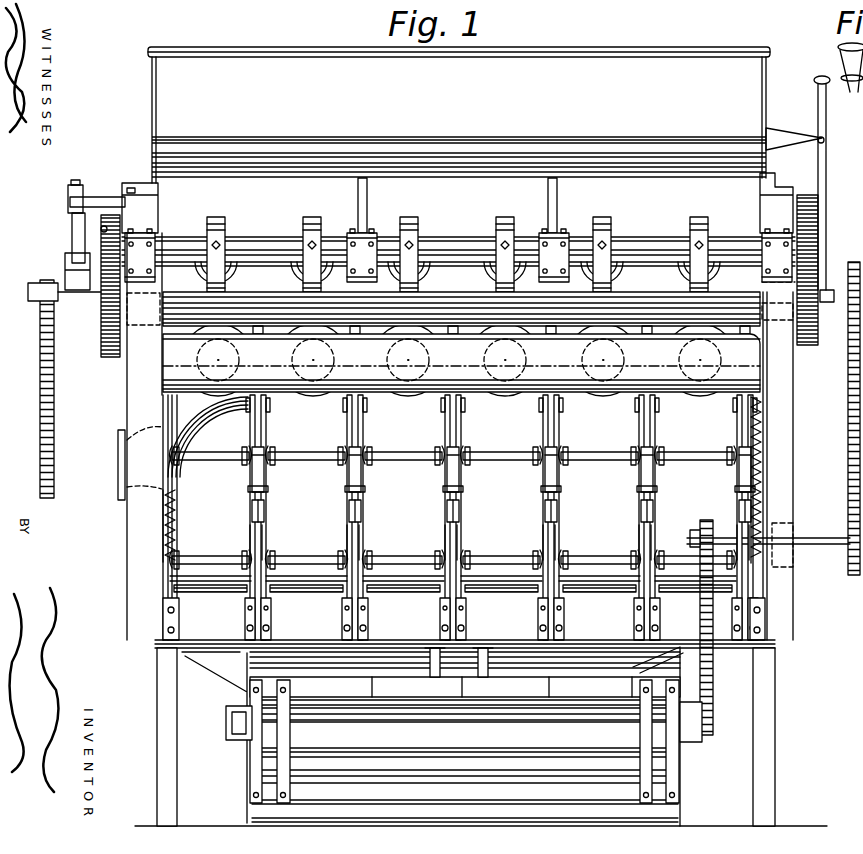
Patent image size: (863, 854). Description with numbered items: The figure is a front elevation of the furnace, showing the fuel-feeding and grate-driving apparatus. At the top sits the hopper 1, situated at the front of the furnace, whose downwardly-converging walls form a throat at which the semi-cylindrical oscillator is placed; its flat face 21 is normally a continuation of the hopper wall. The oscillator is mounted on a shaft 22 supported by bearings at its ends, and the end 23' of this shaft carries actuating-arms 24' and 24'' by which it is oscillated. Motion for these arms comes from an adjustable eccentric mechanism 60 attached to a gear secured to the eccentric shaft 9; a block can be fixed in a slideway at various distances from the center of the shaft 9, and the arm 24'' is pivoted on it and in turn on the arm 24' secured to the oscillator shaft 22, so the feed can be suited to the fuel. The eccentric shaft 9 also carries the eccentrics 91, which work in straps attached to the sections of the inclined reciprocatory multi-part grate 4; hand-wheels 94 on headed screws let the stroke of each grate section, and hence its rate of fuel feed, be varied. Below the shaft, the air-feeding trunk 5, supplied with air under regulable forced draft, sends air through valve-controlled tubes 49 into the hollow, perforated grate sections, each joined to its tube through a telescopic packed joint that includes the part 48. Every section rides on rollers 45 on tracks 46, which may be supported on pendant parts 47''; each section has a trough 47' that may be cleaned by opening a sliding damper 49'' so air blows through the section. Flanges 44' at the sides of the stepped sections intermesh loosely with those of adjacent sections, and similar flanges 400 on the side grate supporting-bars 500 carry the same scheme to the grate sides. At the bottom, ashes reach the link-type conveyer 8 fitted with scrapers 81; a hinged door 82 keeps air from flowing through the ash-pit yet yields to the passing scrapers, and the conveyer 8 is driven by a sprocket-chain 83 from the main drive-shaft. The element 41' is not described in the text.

The hopper 1 is at (459, 115).
The inclined reciprocatory multi-part grate 4 is at (38, 283).
The air-feeding trunk 5 is at (461, 363).
The conveyer 8 is at (465, 761).
The eccentric shaft 9 is at (170, 265).
The flat face of the oscillator 21 is at (102, 229).
The oscillator shaft 22 is at (105, 197).
The end of the oscillator shaft 23' is at (59, 187).
The actuating arm 24' is at (56, 237).
The actuating arm 24'' is at (59, 264).
The guide block 41' is at (501, 459).
The flanges 44' is at (463, 478).
The rollers 45 is at (447, 552).
The tracks 46 is at (447, 586).
The trough 47' is at (463, 519).
The pendant parts 47'' is at (460, 517).
The telescopic packed joint 48 is at (465, 400).
The valve-controlled tube 49 is at (459, 360).
The sliding damper 49'' is at (453, 602).
The adjustable eccentric mechanism 60 is at (93, 300).
The scrapers 81 is at (375, 760).
The hinged door 82 is at (465, 672).
The sprocket-chain 83 is at (713, 690).
The eccentrics 91 is at (690, 229).
The hand-wheels 94 is at (678, 279).
The flanges 400 is at (723, 422).
The side grate supporting-bars 500 is at (768, 602).